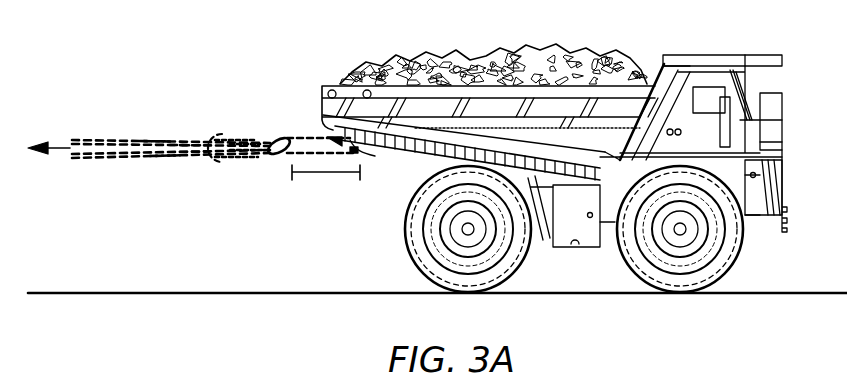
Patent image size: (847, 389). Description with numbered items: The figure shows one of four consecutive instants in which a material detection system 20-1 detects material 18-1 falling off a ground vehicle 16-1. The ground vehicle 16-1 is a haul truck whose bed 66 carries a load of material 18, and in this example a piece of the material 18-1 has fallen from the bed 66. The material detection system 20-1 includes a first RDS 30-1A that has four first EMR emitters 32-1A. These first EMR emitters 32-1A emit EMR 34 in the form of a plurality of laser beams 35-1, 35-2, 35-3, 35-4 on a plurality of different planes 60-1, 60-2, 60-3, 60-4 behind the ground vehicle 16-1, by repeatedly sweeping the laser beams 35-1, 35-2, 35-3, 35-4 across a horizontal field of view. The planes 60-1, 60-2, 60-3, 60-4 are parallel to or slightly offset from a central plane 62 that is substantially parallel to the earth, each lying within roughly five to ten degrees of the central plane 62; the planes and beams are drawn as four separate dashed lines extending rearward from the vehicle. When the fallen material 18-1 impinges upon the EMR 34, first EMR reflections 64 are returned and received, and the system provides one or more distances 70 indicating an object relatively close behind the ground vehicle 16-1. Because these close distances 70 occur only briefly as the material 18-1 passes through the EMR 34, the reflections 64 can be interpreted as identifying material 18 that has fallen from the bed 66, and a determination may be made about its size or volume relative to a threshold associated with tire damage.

The material 18 is at (535, 50).
The ground vehicle 16-1 is at (757, 56).
The bed 66 is at (345, 93).
The first EMR reflections 64 is at (310, 138).
The material 18-1 is at (272, 138).
The material detection system 20-1 is at (370, 153).
The distances 70 is at (315, 174).
The plane 60-1 is at (113, 141).
The plane 60-2 is at (80, 138).
The plane 60-3 is at (80, 160).
The plane 60-4 is at (115, 157).
The laser beam 35-1 is at (155, 139).
The laser beam 35-2 is at (182, 142).
The laser beam 35-3 is at (163, 158).
The laser beam 35-4 is at (193, 156).
The EMR 34 is at (218, 160).
The central plane 62 is at (50, 150).
The first EMR emitters 32-1A is at (385, 166).
The first RDS 30-1A is at (417, 232).